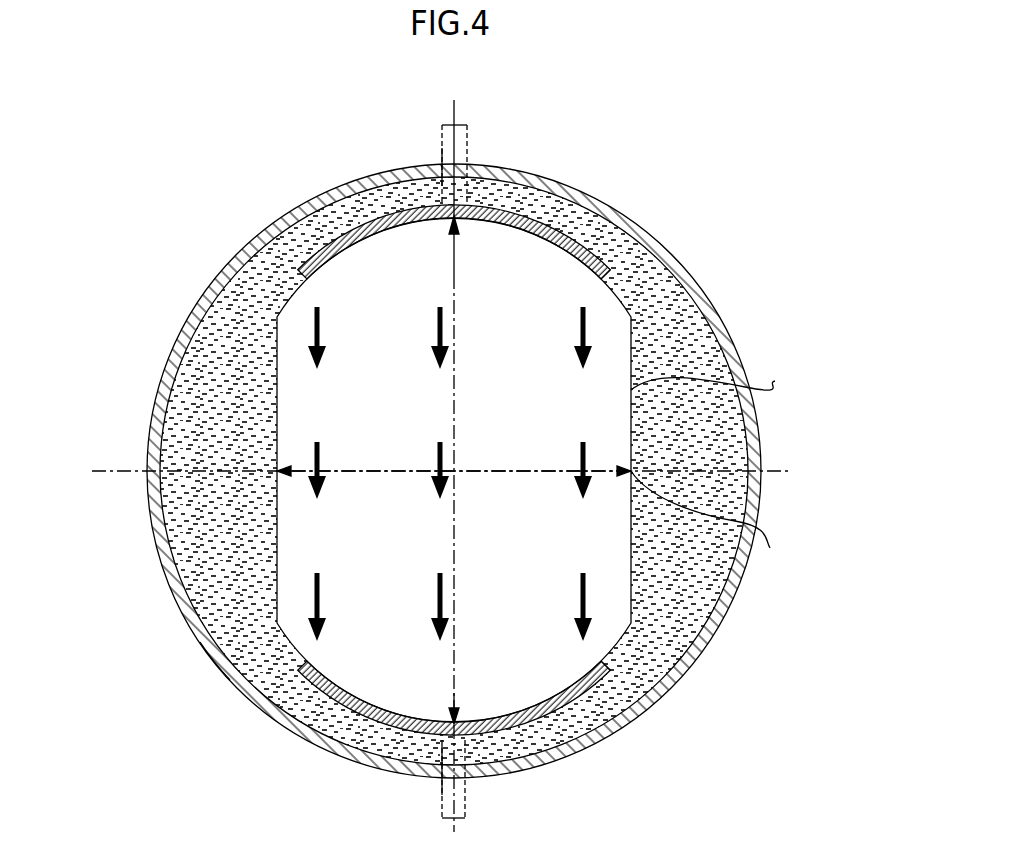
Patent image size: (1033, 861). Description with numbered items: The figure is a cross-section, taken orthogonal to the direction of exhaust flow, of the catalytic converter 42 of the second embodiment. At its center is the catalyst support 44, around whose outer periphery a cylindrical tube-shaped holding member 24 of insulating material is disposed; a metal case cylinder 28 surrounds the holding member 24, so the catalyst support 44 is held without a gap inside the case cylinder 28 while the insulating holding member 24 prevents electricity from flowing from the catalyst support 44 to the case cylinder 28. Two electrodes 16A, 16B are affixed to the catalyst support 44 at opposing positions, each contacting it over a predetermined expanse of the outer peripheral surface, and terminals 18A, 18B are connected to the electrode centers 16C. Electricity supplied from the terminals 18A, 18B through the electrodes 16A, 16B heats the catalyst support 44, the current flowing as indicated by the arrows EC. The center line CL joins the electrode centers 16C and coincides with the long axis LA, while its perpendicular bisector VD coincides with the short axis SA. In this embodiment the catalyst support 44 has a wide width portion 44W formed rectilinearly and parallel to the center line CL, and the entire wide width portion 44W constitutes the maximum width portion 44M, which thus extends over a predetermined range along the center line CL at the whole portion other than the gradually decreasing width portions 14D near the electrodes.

The catalytic converter 42 is at (613, 161).
The holding member 24 is at (255, 303).
The catalyst support 44 is at (283, 642).
The gradually decreasing width portions 14D is at (360, 228).
The electrode 16A is at (577, 240).
The electrode 16B is at (563, 710).
The electrode center 16C is at (470, 210).
The terminal 18A is at (442, 158).
The terminal 18B is at (440, 803).
The center line CL is at (452, 548).
The long axis LA is at (454, 273).
The perpendicular bisector VD is at (120, 468).
The short axis SA is at (518, 478).
The arrows EC is at (437, 330).
The wide width portion 44W is at (730, 384).
The maximum width portion 44M is at (719, 525).
The case cylinder 28 is at (200, 642).